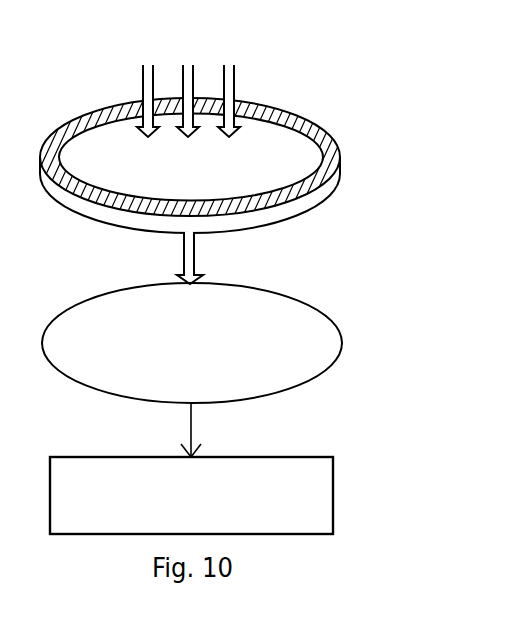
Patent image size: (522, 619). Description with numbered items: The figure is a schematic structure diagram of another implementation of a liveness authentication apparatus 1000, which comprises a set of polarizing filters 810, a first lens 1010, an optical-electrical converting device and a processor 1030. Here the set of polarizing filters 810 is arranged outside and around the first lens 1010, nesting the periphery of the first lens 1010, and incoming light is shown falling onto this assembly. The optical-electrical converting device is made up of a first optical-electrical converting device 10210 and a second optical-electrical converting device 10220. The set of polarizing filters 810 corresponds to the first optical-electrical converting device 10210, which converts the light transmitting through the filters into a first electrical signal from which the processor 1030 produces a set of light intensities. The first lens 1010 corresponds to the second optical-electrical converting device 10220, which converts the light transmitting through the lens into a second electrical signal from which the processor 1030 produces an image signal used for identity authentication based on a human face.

The liveness authentication apparatus 1000 is at (102, 36).
The set of polarizing filters 810 is at (327, 135).
The first lens 1010 is at (191, 157).
The first optical-electrical converting device 10210 is at (308, 204).
The second optical-electrical converting device 10220 is at (237, 343).
The processor 1030 is at (235, 495).